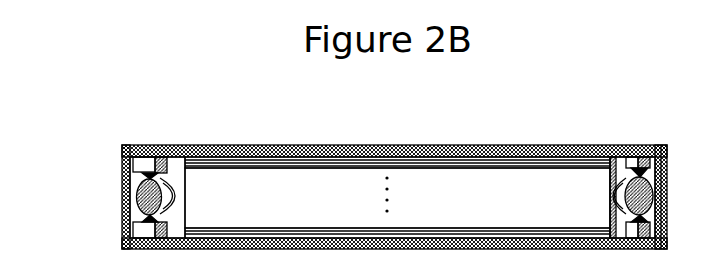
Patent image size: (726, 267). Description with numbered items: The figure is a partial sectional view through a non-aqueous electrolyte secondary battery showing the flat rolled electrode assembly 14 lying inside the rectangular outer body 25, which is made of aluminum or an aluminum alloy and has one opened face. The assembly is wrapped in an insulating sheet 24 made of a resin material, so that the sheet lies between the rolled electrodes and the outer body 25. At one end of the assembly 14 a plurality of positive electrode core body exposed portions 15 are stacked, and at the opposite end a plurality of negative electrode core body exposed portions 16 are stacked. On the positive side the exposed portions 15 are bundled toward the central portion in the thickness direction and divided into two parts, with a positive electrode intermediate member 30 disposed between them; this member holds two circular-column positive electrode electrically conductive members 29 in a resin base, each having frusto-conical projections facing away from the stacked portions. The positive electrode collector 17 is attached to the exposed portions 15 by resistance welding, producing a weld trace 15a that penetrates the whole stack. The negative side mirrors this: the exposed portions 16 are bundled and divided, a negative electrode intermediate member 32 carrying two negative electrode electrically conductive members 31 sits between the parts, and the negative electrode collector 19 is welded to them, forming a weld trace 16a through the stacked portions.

The flat rolled electrode assembly 14 is at (513, 176).
The positive electrode core body exposed portion 15 is at (634, 169).
The weld trace 15a is at (640, 168).
The negative electrode core body exposed portion 16 is at (156, 171).
The weld trace 16a is at (155, 175).
The positive electrode collector 17 is at (661, 148).
The negative electrode collector 19 is at (122, 150).
The insulating sheet 24 is at (340, 152).
The rectangular outer body 25 is at (292, 147).
The positive electrode electrically conductive member 29 is at (658, 180).
The positive electrode intermediate member 30 is at (656, 194).
The negative electrode electrically conductive member 31 is at (132, 182).
The negative electrode intermediate member 32 is at (134, 200).